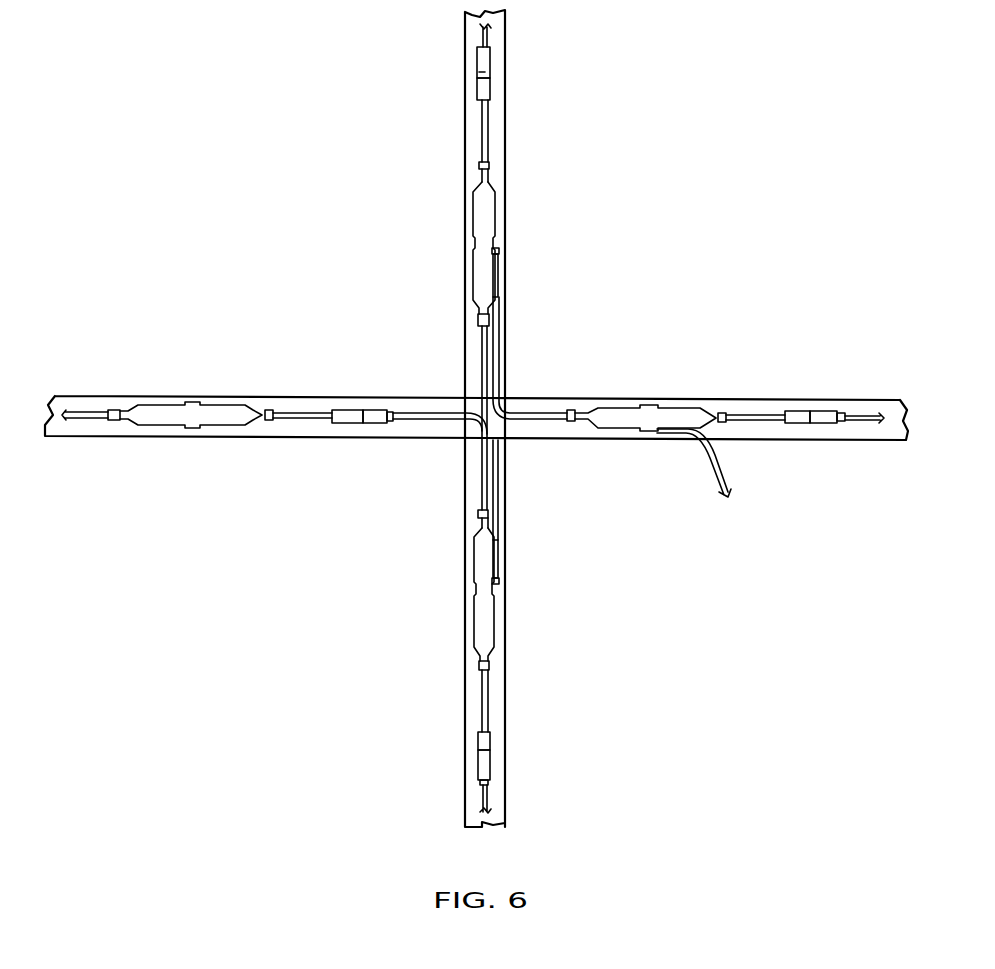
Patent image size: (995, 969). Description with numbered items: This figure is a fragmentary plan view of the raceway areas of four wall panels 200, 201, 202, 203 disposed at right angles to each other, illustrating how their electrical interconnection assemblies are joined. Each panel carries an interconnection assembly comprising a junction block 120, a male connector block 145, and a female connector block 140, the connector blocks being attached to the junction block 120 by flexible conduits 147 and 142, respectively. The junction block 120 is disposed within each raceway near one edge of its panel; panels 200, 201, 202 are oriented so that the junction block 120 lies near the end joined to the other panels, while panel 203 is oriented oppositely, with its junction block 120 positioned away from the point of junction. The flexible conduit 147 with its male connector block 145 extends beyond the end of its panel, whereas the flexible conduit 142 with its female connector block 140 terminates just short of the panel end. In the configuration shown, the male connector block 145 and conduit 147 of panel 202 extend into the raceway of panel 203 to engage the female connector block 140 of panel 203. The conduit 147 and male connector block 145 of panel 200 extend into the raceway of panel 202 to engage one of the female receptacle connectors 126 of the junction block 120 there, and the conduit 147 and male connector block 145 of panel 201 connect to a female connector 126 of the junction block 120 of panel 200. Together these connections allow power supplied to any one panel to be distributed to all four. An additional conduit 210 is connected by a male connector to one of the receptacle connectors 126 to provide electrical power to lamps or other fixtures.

The junction block 120 is at (472, 242).
The female receptacle connector 126 is at (500, 251).
The female connector block 140 is at (491, 85).
The flexible conduit 142 is at (490, 132).
The male connector block 145 is at (490, 63).
The flexible conduit 147 is at (497, 343).
The panel 200 is at (506, 177).
The panel 201 is at (565, 401).
The panel 202 is at (466, 543).
The panel 203 is at (377, 434).
The conduit 210 is at (716, 473).